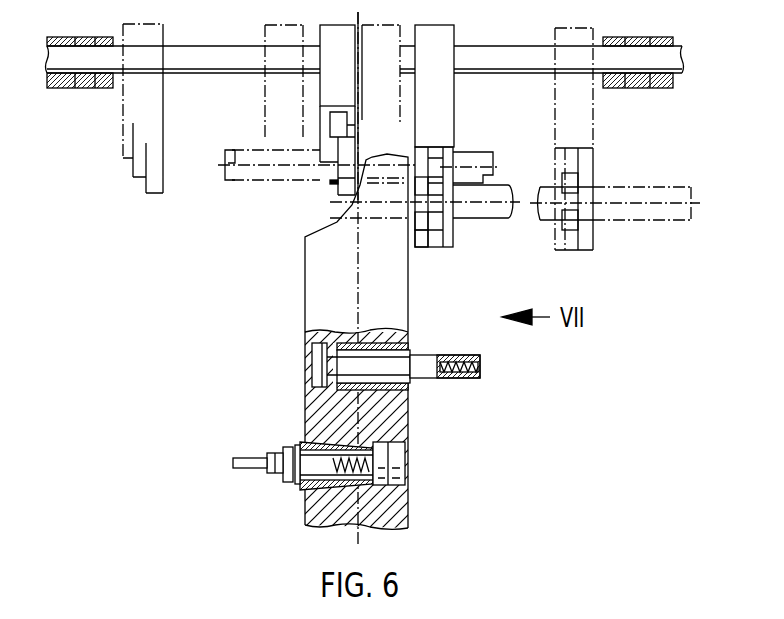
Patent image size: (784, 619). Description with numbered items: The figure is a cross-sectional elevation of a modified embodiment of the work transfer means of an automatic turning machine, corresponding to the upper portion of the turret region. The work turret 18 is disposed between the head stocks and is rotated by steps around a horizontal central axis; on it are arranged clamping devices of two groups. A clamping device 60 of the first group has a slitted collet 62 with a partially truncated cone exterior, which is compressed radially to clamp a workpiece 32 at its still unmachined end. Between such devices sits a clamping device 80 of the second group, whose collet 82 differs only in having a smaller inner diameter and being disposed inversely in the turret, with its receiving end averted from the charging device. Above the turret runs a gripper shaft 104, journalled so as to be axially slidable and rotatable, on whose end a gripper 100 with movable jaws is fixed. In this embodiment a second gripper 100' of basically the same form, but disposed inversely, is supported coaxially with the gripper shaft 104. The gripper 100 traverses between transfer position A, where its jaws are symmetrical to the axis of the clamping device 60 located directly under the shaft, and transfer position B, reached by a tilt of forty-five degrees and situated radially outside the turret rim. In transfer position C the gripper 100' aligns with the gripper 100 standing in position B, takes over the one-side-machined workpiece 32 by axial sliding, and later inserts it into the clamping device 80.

The work turret 18 is at (313, 280).
The workpiece 32 is at (247, 181).
The clamping device 60 is at (396, 334).
The collet 62 is at (393, 336).
The clamping device 80 is at (319, 457).
The collet 82 is at (312, 483).
The gripper 100 is at (534, 160).
The gripper 100' is at (239, 136).
The gripper shaft 104 is at (524, 74).
The transfer position A is at (485, 204).
The transfer position B is at (481, 152).
The transfer position C is at (232, 150).